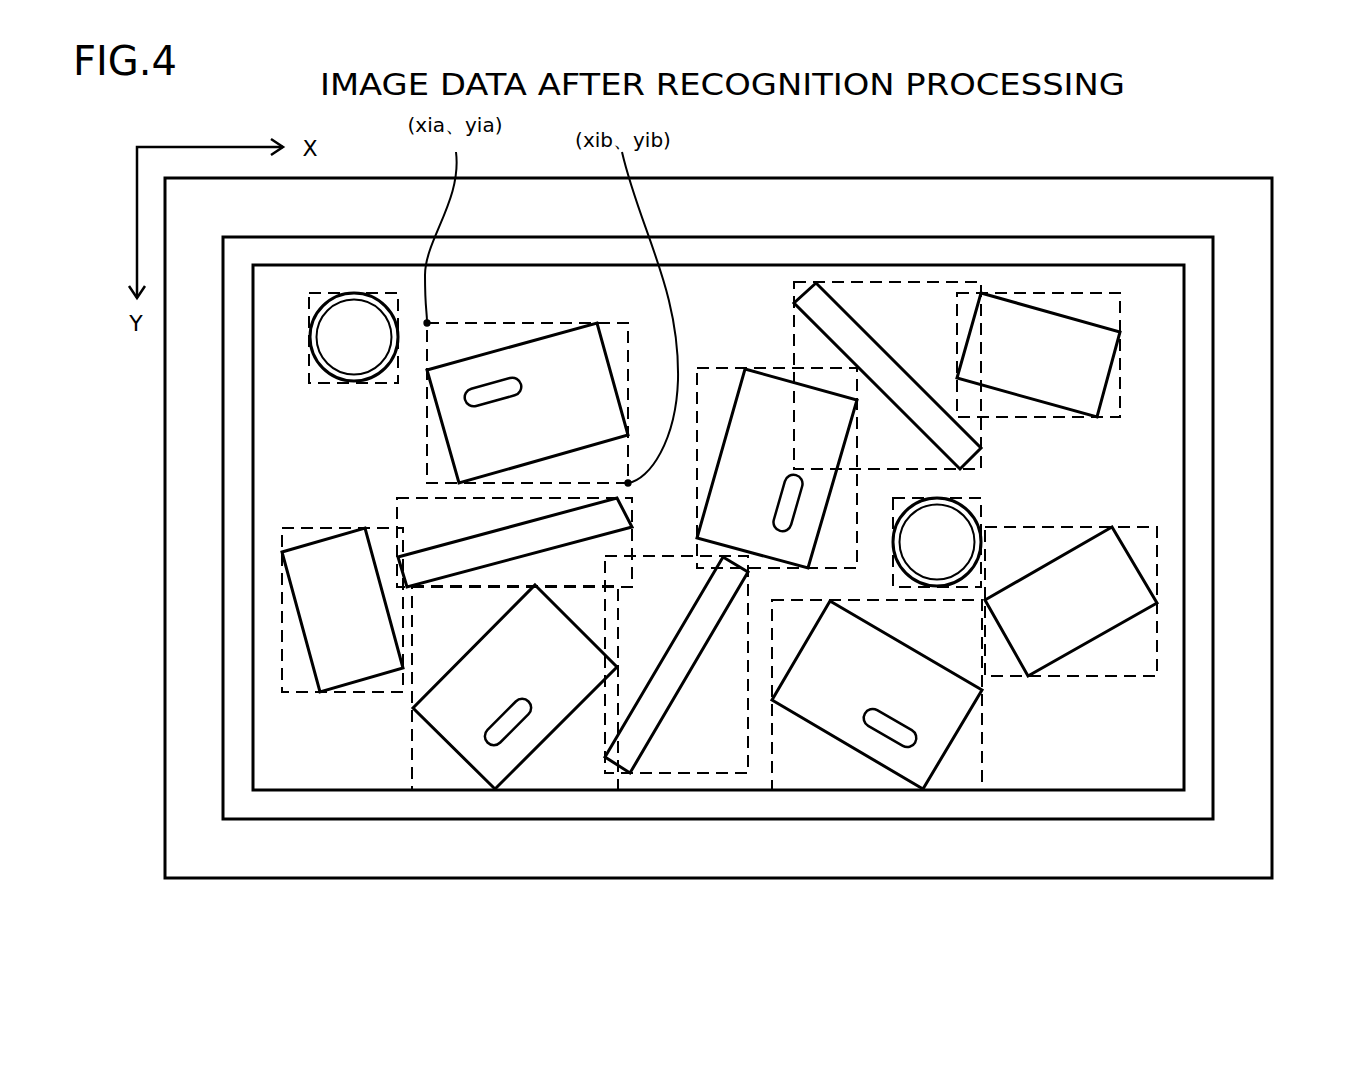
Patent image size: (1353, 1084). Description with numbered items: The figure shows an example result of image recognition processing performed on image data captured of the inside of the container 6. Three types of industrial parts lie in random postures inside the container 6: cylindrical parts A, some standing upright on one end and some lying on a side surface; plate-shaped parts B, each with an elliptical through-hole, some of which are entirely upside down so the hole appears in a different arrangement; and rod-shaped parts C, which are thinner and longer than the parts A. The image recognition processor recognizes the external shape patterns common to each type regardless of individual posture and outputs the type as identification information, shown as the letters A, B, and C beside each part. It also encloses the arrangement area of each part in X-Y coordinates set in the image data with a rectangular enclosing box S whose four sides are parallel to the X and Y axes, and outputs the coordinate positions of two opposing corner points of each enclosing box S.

The container 6 is at (1197, 333).
The enclosing box S is at (410, 758).
The cylindrical part A is at (719, 480).
The plate-shaped part B is at (684, 542).
The rod-shaped part C is at (686, 526).